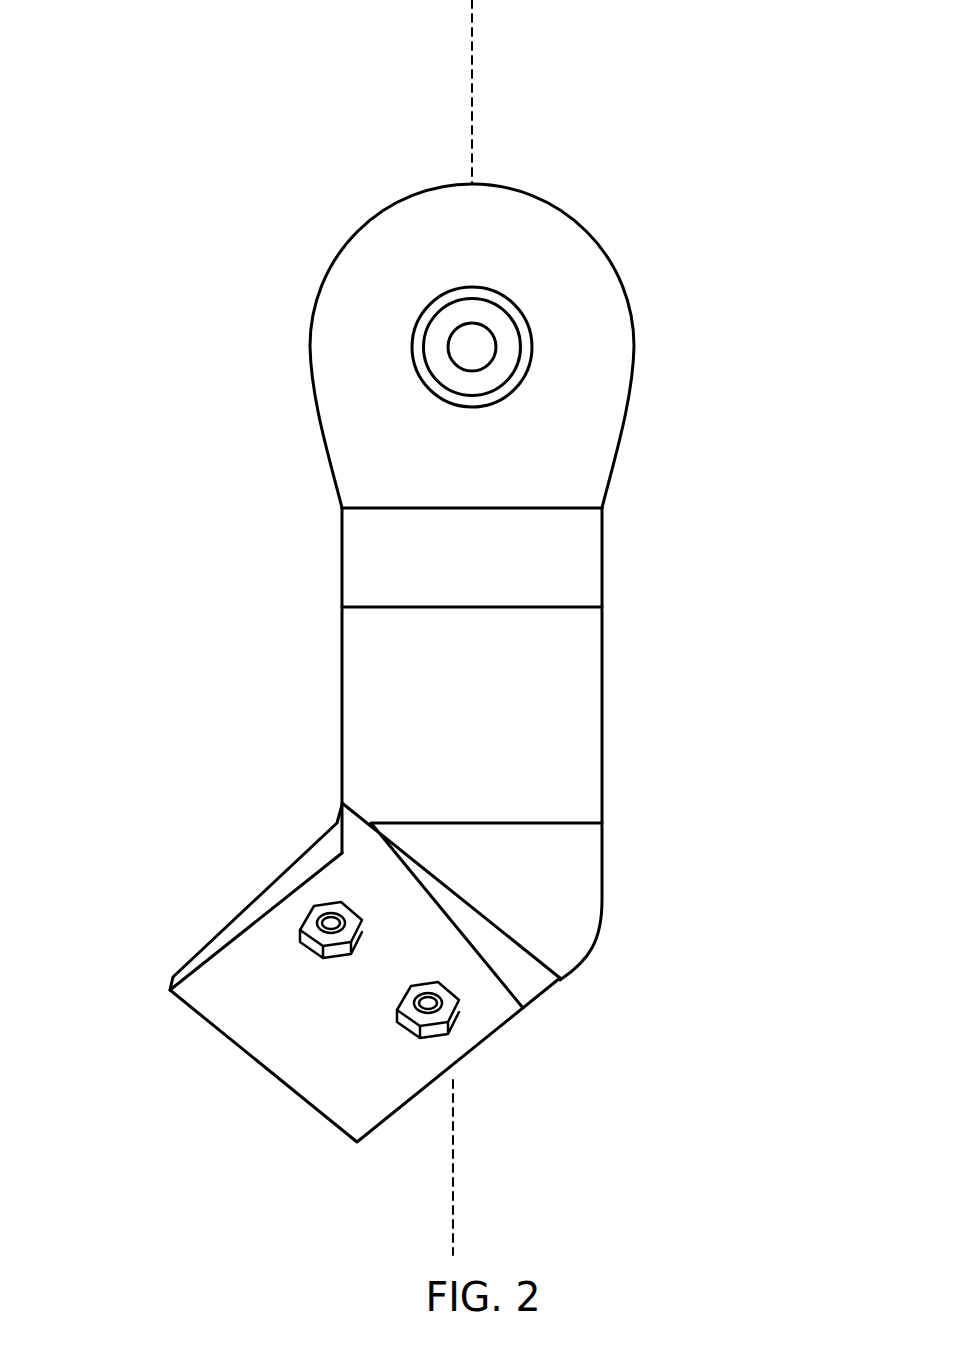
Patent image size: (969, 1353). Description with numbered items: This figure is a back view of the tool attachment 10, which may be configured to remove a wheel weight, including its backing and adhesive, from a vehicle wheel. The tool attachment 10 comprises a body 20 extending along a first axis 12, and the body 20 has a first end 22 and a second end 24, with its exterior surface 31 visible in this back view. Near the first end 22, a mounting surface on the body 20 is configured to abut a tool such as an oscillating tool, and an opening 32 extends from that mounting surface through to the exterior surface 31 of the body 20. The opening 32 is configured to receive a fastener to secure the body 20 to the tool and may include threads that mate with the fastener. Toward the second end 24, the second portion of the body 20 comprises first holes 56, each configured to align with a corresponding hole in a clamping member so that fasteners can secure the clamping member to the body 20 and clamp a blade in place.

The tool attachment 10 is at (243, 272).
The first axis 12 is at (473, 115).
The body 20 is at (338, 681).
The first end 22 is at (472, 183).
The second end 24 is at (293, 1093).
The exterior surface 31 is at (540, 584).
The opening 32 is at (493, 348).
The first hole 56 is at (305, 918).